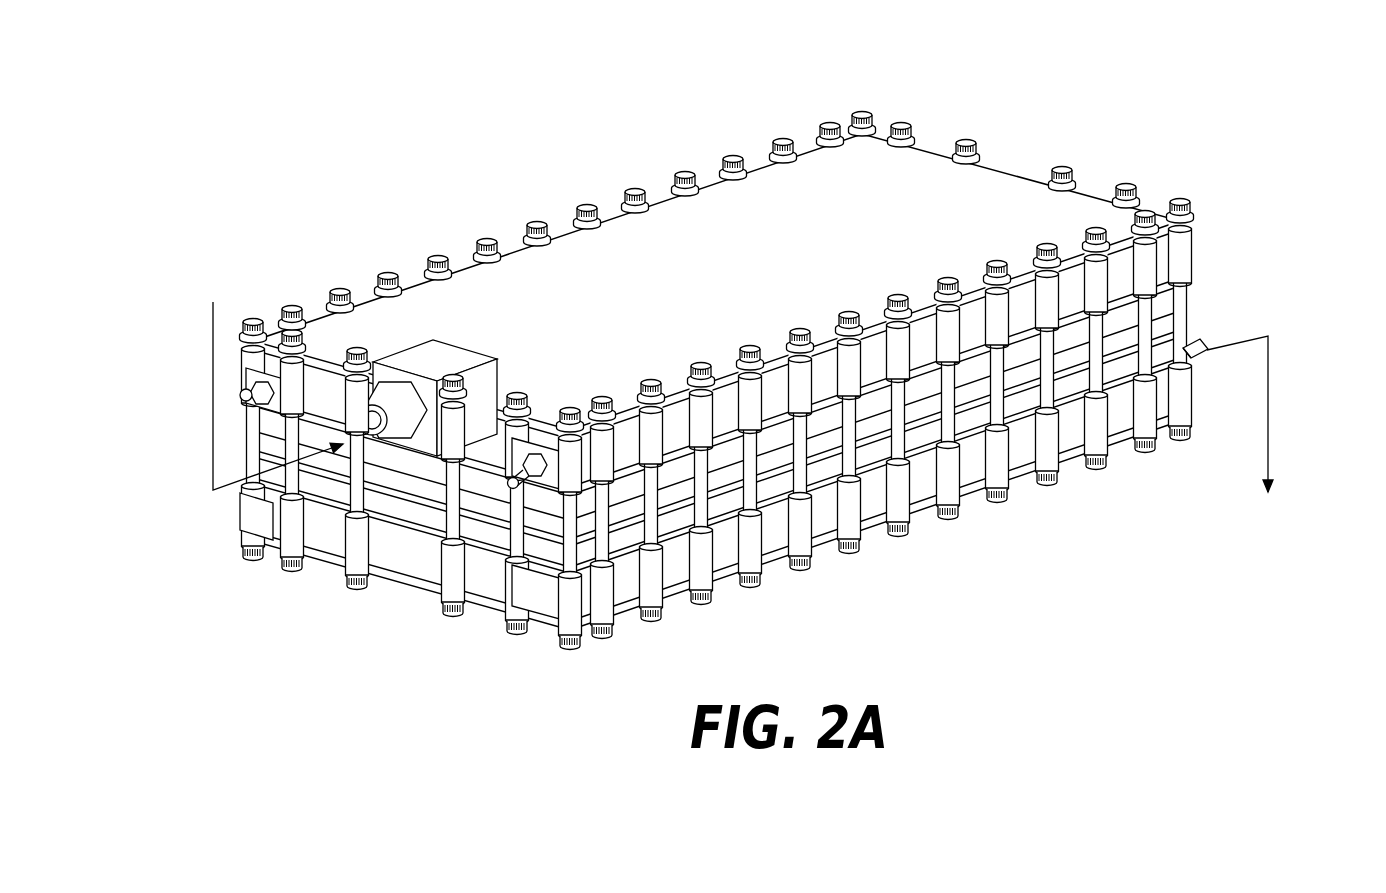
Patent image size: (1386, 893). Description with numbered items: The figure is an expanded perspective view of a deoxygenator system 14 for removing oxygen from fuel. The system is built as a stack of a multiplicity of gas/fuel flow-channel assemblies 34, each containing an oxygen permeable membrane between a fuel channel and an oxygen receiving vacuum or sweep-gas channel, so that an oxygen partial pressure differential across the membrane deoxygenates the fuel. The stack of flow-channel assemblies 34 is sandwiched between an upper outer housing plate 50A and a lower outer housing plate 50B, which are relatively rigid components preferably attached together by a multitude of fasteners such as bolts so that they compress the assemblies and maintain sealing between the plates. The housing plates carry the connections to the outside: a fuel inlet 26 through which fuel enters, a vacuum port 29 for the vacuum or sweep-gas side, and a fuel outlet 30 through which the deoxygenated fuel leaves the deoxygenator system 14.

The deoxygenator system 14 is at (752, 364).
The fuel inlet 26 is at (368, 403).
The vacuum port 29 is at (521, 473).
The fuel outlet 30 is at (1206, 334).
The gas/fuel flow-channel assembly 34 is at (407, 494).
The outer housing plate 50A is at (577, 261).
The outer housing plate 50B is at (923, 491).